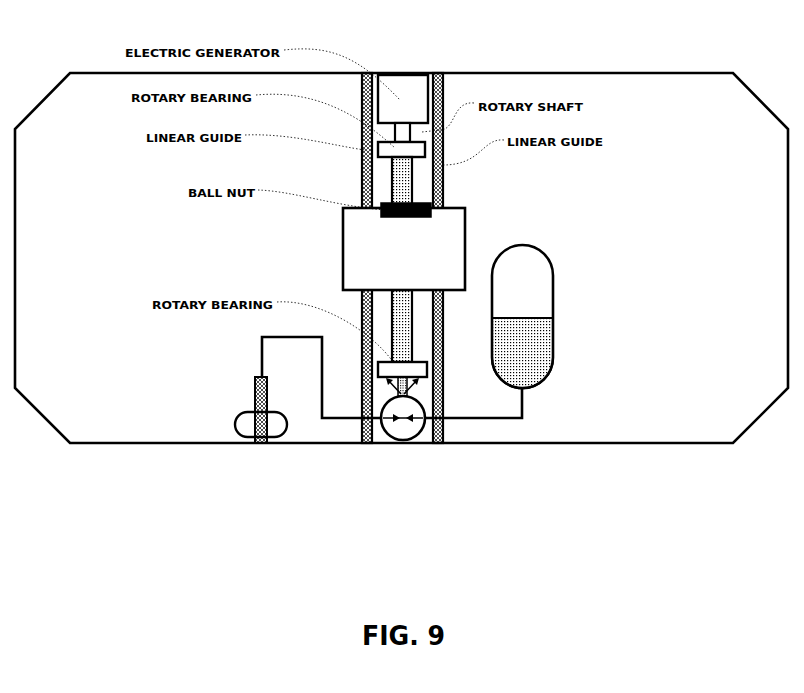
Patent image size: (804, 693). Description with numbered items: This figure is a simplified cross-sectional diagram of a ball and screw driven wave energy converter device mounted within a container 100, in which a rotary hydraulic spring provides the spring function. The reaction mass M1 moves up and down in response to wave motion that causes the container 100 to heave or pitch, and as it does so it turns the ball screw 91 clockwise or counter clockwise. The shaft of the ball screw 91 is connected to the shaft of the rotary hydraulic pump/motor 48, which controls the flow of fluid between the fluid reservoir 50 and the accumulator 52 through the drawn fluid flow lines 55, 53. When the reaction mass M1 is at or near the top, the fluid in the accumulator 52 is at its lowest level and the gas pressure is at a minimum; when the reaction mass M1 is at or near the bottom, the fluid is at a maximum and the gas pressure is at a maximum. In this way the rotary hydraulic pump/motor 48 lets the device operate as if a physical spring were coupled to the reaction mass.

The container 100 is at (627, 73).
The ball screw 91 is at (395, 185).
The reaction mass M1 is at (460, 216).
The accumulator 52 is at (548, 253).
The fluid flow line 53 is at (526, 412).
The fluid reservoir 50 is at (272, 443).
The fluid flow line 55 is at (332, 420).
The rotary hydraulic pump/motor 48 is at (403, 445).